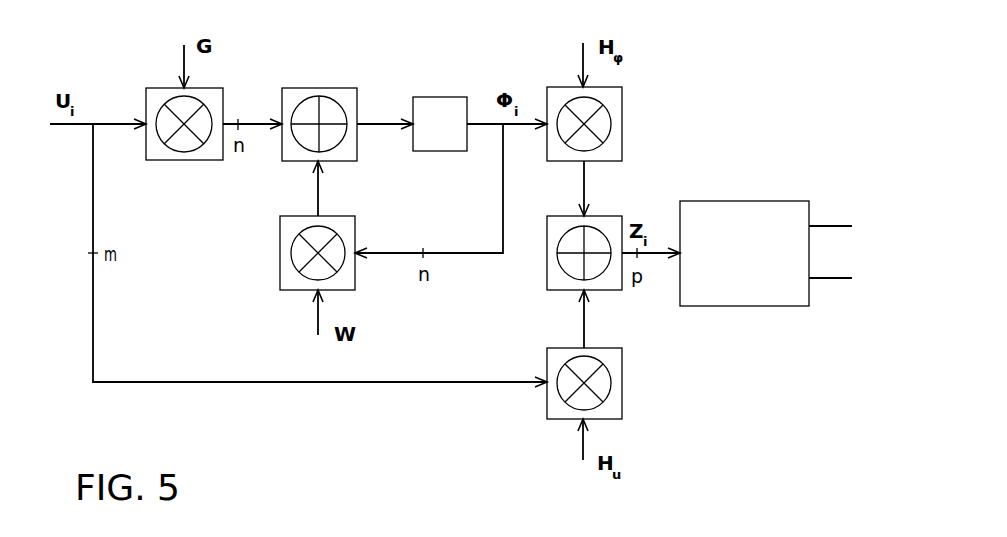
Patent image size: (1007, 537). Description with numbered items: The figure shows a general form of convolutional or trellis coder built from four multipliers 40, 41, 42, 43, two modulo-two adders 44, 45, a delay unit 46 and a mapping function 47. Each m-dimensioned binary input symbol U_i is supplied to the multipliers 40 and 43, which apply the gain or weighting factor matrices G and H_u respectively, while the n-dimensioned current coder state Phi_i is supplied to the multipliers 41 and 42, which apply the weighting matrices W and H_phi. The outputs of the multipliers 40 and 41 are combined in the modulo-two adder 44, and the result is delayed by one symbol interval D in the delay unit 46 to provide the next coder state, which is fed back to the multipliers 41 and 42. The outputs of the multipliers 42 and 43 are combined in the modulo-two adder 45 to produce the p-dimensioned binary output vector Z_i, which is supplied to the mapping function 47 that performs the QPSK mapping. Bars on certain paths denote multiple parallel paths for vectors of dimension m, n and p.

The multiplier 40 is at (190, 160).
The multiplier 41 is at (280, 248).
The multiplier 42 is at (618, 117).
The multiplier 43 is at (617, 377).
The modulo-2 adder 44 is at (308, 88).
The modulo-2 adder 45 is at (552, 278).
The delay unit 46 is at (428, 97).
The mapping function 47 is at (732, 201).